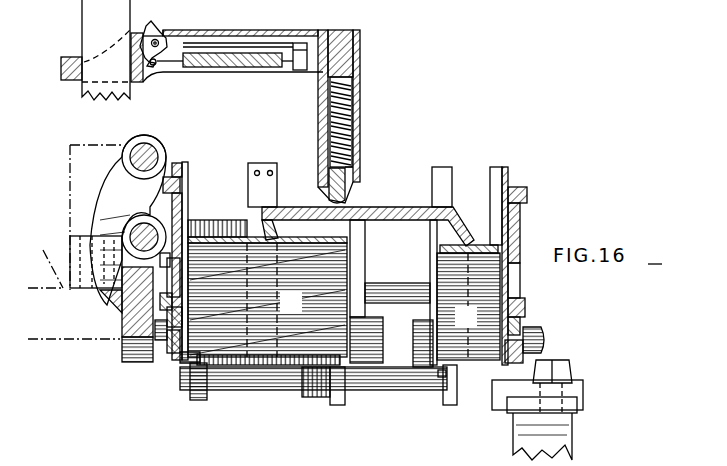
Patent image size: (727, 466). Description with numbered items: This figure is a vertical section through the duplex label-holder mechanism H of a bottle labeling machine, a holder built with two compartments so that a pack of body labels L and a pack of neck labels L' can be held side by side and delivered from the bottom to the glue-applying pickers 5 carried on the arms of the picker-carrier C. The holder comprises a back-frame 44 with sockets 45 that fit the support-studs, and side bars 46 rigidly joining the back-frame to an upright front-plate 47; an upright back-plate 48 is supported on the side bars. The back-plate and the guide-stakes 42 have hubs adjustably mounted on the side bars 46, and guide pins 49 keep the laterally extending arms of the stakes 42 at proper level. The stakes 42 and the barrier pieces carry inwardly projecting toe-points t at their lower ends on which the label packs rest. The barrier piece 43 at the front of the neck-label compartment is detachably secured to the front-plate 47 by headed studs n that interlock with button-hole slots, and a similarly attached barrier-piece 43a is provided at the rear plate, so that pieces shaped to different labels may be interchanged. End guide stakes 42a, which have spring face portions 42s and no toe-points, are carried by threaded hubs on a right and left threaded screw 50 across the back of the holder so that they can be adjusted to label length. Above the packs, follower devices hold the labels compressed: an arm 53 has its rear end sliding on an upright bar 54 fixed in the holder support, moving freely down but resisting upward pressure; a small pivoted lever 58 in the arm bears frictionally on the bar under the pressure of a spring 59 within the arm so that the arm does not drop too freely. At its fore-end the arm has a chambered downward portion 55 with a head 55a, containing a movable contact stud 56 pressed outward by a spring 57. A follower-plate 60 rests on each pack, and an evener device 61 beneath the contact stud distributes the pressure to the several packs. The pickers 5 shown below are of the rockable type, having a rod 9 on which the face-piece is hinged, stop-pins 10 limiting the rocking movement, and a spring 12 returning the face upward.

The upright bar 54 is at (94, 21).
The pivoted lever 58 is at (140, 27).
The arm 53 is at (253, 34).
The spring 59 is at (240, 68).
The chambered downwardly extending portion 55 is at (360, 99).
The sleeve head 55a is at (334, 31).
The spring 57 is at (359, 138).
The contact-point or stud 56 is at (326, 185).
The guide stakes 42a is at (266, 160).
The spring face portions 42s is at (256, 199).
The evener device 61 is at (396, 208).
The follower-plate 60 is at (305, 244).
The labels L is at (267, 300).
The labels L' is at (468, 306).
The label-holder mechanism H is at (393, 292).
The guide pins 49 is at (406, 296).
The side bars 46 is at (400, 334).
The guide-stakes 42 is at (440, 178).
The barrier piece 43 is at (508, 167).
The front-plate 47 is at (521, 231).
The headed studs n is at (528, 195).
The toe-points t is at (530, 348).
The glue-applying pickers 5 is at (585, 395).
The picker-carrier C is at (565, 446).
The axis or rod 9 is at (388, 382).
The spring 12 is at (318, 396).
The stop-pins 10 is at (441, 374).
The sockets 45 is at (254, 463).
The back-frame 44 is at (124, 338).
The barrier-piece 43a is at (188, 170).
The back-plate 48 is at (178, 163).
The right and left threaded screw 50 is at (128, 236).